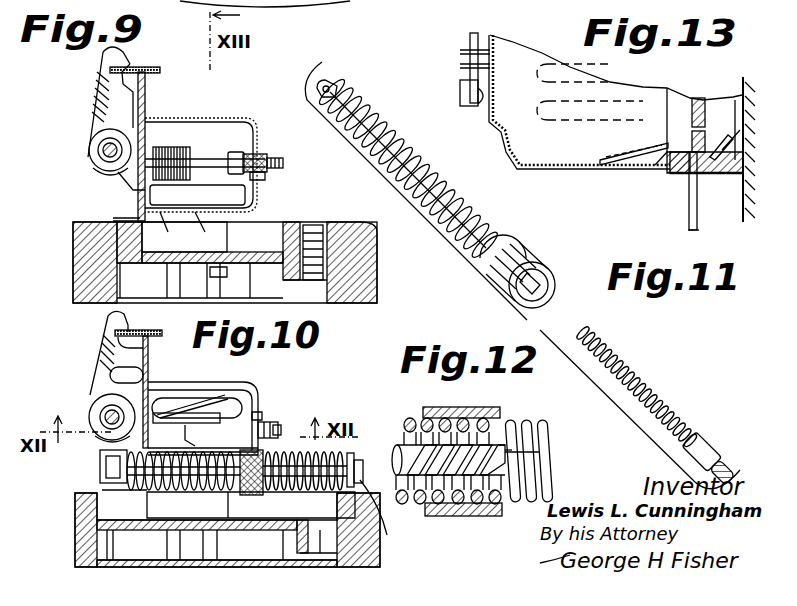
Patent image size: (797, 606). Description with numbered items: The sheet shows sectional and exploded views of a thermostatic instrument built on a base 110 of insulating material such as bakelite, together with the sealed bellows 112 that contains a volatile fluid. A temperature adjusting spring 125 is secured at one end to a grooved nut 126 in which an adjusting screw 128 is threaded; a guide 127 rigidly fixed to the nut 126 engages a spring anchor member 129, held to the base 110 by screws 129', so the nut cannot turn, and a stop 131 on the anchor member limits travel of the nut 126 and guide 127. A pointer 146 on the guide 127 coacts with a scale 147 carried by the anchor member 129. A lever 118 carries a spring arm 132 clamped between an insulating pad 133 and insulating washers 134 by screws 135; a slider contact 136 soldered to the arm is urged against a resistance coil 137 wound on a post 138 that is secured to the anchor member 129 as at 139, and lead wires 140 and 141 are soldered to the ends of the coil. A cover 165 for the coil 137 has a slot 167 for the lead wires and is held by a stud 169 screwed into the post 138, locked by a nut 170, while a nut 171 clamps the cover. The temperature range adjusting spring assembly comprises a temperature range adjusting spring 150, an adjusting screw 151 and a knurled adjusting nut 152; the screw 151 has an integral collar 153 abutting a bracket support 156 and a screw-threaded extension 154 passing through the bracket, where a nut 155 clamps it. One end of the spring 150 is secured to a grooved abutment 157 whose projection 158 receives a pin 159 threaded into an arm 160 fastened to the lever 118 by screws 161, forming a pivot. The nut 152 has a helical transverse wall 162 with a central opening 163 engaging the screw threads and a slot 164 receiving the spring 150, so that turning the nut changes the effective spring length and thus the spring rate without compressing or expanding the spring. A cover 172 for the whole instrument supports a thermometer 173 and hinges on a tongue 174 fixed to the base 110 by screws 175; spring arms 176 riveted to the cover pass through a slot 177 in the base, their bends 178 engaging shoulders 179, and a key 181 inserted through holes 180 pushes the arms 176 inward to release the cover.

In FIG. 9, the base 110 is at (377, 281).
In FIG. 10, the base 110 is at (75, 528).
In FIG. 13, the base 110 is at (706, 98).
In FIG. 9, the sealed bellows 112 is at (289, 3).
In FIG. 10, the lever 118 is at (220, 420).
In FIG. 9, the temperature adjusting spring 125 is at (112, 171).
In FIG. 10, the temperature adjusting spring 125 is at (93, 400).
In FIG. 9, the grooved nut 126 is at (98, 153).
In FIG. 10, the grooved nut 126 is at (100, 382).
In FIG. 9, the guide 127 is at (102, 106).
In FIG. 10, the guide 127 is at (100, 348).
In FIG. 9, the adjusting screw 128 is at (94, 142).
In FIG. 10, the adjusting screw 128 is at (95, 414).
In FIG. 9, the spring anchor member 129 is at (166, 147).
In FIG. 10, the spring anchor member 129 is at (164, 392).
In FIG. 9, the screws 129' is at (89, 216).
In FIG. 10, the stop 131 is at (143, 374).
In FIG. 10, the spring arm 132 is at (248, 385).
In FIG. 10, the insulating pad 133 is at (198, 412).
In FIG. 10, the insulating washers 134 is at (205, 398).
In FIG. 10, the screws 135 is at (183, 398).
In FIG. 9, the slider contact 136 is at (172, 148).
In FIG. 9, the resistance coil 137 is at (200, 153).
In FIG. 9, the post 138 is at (242, 150).
In FIG. 9, the post securing point 139 is at (130, 185).
In FIG. 9, the lead wire 140 is at (171, 233).
In FIG. 9, the lead wire 141 is at (205, 233).
In FIG. 9, the pointer 146 is at (108, 57).
In FIG. 10, the pointer 146 is at (118, 326).
In FIG. 9, the scale 147 is at (146, 68).
In FIG. 10, the scale 147 is at (150, 336).
In FIG. 10, the temperature range adjusting spring 150 is at (285, 450).
In FIG. 11, the temperature range adjusting spring 150 is at (428, 170).
In FIG. 12, the temperature range adjusting spring 150 is at (528, 430).
In FIG. 10, the adjusting screw 151 is at (298, 490).
In FIG. 11, the adjusting screw 151 is at (655, 400).
In FIG. 12, the adjusting screw 151 is at (398, 440).
In FIG. 10, the knurled adjusting nut 152 is at (251, 496).
In FIG. 11, the knurled adjusting nut 152 is at (522, 258).
In FIG. 12, the knurled adjusting nut 152 is at (480, 407).
In FIG. 10, the integral collar 153 is at (349, 456).
In FIG. 11, the integral collar 153 is at (708, 443).
In FIG. 10, the screw-threaded extension 154 is at (366, 453).
In FIG. 11, the screw-threaded extension 154 is at (726, 460).
In FIG. 10, the nut 155 is at (389, 513).
In FIG. 10, the bracket support 156 is at (345, 513).
In FIG. 10, the grooved abutment 157 is at (140, 490).
In FIG. 11, the grooved abutment 157 is at (345, 95).
In FIG. 10, the projection 158 is at (108, 472).
In FIG. 11, the projection 158 is at (333, 83).
In FIG. 10, the pin 159 is at (108, 461).
In FIG. 10, the arm 160 is at (178, 455).
In FIG. 10, the screws 161 is at (197, 446).
In FIG. 11, the transverse wall 162 is at (550, 294).
In FIG. 12, the transverse wall 162 is at (465, 517).
In FIG. 11, the central opening 163 is at (520, 305).
In FIG. 12, the central opening 163 is at (545, 456).
In FIG. 11, the slot 164 is at (545, 272).
In FIG. 12, the slot 164 is at (505, 445).
In FIG. 9, the cover 165 is at (230, 110).
In FIG. 9, the slot 167 is at (258, 195).
In FIG. 9, the stud 169 is at (283, 163).
In FIG. 10, the stud 169 is at (278, 422).
In FIG. 9, the nut 170 is at (255, 153).
In FIG. 9, the nut 171 is at (265, 177).
In FIG. 10, the nut 171 is at (258, 410).
In FIG. 13, the cover 172 is at (600, 169).
In FIG. 13, the thermometer 173 is at (470, 70).
In FIG. 9, the tongue 174 is at (228, 240).
In FIG. 9, the screws 175 is at (224, 277).
In FIG. 13, the spring arms 176 is at (660, 150).
In FIG. 13, the slot 177 is at (688, 145).
In FIG. 13, the bends 178 is at (713, 167).
In FIG. 13, the shoulders 179 is at (701, 152).
In FIG. 13, the holes 180 is at (672, 176).
In FIG. 13, the key 181 is at (688, 220).